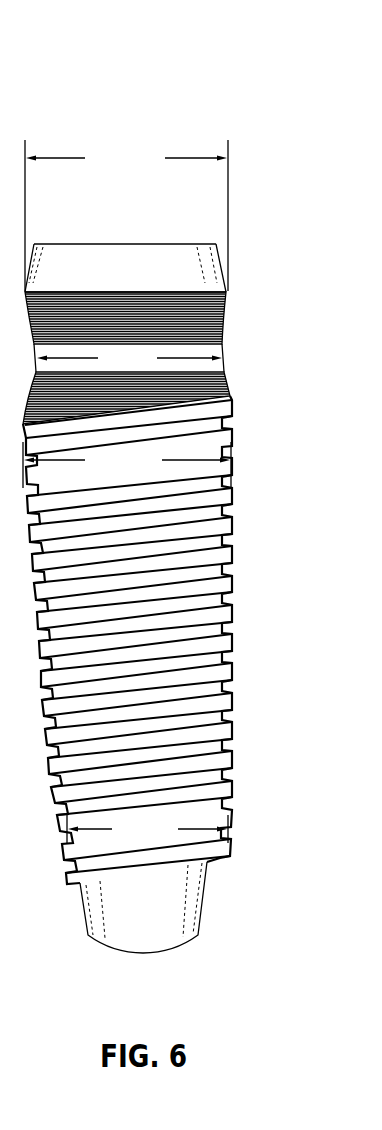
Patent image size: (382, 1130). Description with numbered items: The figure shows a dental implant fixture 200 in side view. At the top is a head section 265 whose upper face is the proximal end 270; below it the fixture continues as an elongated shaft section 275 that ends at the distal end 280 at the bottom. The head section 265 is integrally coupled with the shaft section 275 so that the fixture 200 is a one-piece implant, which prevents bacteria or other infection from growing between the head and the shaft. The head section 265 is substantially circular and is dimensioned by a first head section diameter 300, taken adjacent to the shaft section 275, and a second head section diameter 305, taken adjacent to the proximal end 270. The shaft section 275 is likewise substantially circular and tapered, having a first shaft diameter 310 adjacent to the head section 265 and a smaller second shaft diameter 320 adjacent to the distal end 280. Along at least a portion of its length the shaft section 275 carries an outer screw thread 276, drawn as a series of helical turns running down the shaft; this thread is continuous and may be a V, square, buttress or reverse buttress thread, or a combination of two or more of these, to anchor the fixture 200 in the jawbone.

The dental implant fixture 200 is at (92, 104).
The head section 265 is at (222, 262).
The proximal end 270 is at (128, 245).
The elongated shaft section 275 is at (233, 623).
The outer screw thread 276 is at (233, 707).
The distal end 280 is at (175, 943).
The first head section diameter 300 is at (129, 357).
The second head section diameter 305 is at (126, 215).
The first shaft diameter 310 is at (127, 465).
The second shaft diameter 320 is at (147, 829).